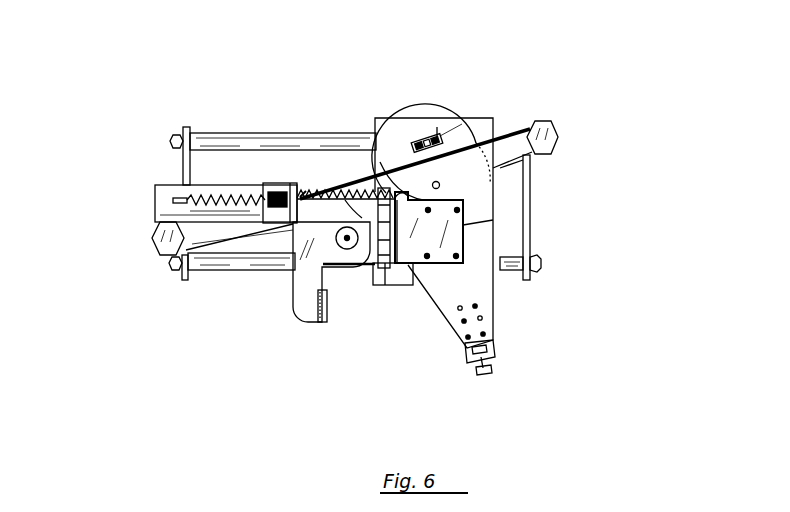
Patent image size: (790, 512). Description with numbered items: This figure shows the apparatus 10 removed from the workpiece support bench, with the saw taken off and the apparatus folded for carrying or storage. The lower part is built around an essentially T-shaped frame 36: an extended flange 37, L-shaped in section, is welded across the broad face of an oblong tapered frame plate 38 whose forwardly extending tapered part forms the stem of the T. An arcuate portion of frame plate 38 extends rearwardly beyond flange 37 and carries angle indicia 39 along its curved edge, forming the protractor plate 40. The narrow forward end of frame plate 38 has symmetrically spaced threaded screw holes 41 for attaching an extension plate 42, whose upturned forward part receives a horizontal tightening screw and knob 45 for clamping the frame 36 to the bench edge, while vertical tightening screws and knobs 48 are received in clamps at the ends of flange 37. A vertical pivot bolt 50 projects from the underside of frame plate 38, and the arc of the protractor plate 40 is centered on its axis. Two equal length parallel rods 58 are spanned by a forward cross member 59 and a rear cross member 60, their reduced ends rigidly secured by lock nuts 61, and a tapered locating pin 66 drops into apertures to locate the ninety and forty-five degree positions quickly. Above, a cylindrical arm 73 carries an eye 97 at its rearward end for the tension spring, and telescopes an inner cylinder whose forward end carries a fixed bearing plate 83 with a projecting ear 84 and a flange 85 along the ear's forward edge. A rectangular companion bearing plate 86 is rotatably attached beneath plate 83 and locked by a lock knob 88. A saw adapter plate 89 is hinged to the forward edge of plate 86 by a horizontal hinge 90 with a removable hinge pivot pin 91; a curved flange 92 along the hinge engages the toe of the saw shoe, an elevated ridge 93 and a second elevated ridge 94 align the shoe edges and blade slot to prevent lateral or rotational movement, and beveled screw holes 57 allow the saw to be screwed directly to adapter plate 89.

The apparatus 10 is at (322, 110).
The T-shaped frame 36 is at (512, 126).
The flange 37 is at (333, 190).
The frame plate 38 is at (495, 285).
The angle indicia 39 is at (412, 150).
The protractor plate 40 is at (455, 140).
The screw holes 41 is at (482, 318).
The extension plate 42 is at (495, 350).
The tightening screw and knob 45 is at (485, 376).
The vertical tightening screws and knobs 48 is at (557, 124).
The pivot bolt 50 is at (440, 185).
The screw holes 57 is at (460, 210).
The rods 58 is at (208, 134).
The forward cross member 59 is at (531, 242).
The rear cross member 60 is at (183, 164).
The lock nuts 61 is at (175, 138).
The locating pin 66 is at (429, 138).
The cylindrical arm 73 is at (228, 190).
The bearing plate 83 is at (292, 238).
The projecting ear 84 is at (292, 303).
The flange 85 is at (324, 320).
The companion bearing plate 86 is at (366, 266).
The lock knob 88 is at (343, 242).
The saw adapter plate 89 is at (463, 226).
The hinge 90 is at (395, 258).
The hinge pivot pin 91 is at (385, 272).
The flange 92 is at (398, 240).
The elevated ridge 93 is at (410, 265).
The elevated ridge 94 is at (400, 160).
The eye 97 is at (172, 204).